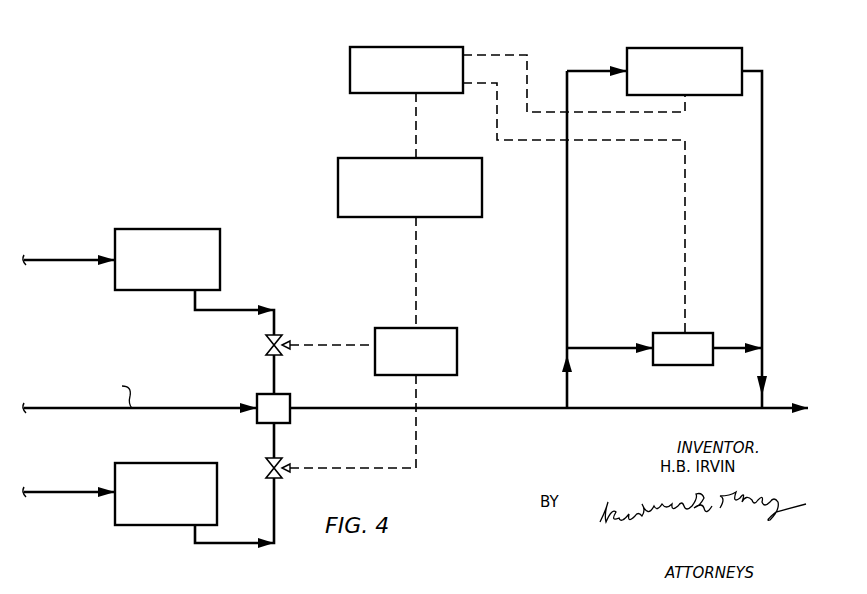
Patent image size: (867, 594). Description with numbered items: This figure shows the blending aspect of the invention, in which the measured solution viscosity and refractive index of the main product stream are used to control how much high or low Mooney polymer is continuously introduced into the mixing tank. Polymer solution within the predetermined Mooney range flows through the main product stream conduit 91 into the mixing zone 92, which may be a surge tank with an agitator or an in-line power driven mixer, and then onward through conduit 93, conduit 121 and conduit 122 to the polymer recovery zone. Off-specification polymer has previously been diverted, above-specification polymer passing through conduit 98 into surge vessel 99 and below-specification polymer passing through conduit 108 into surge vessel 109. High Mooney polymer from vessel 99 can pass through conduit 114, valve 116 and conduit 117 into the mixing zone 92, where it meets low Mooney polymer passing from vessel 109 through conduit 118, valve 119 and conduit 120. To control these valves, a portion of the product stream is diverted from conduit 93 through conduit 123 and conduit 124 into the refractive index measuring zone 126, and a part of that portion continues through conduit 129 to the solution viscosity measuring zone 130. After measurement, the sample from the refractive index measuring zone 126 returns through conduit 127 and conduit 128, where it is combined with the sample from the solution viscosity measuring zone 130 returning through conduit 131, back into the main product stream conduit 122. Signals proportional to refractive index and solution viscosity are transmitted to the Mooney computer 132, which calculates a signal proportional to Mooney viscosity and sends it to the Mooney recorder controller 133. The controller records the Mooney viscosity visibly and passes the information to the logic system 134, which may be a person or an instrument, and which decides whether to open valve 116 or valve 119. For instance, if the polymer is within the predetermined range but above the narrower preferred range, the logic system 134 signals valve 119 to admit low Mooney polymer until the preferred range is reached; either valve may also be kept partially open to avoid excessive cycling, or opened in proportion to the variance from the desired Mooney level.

The conduit 91 is at (191, 408).
The mixing zone 92 is at (290, 423).
The conduit 93 is at (488, 408).
The conduit 98 is at (44, 261).
The surge vessel 99 is at (217, 282).
The conduit 108 is at (77, 492).
The surge vessel 109 is at (115, 515).
The conduit 114 is at (274, 312).
The valve 116 is at (266, 352).
The conduit 117 is at (280, 379).
The conduit 118 is at (192, 544).
The valve 119 is at (264, 472).
The conduit 120 is at (271, 444).
The conduit 121 is at (611, 408).
The conduit 122 is at (801, 408).
The conduit 123 is at (564, 367).
The conduit 124 is at (620, 344).
The refractive index measuring zone 126 is at (667, 333).
The conduit 127 is at (736, 344).
The conduit 128 is at (762, 367).
The conduit 129 is at (567, 208).
The solution viscosity measuring zone 130 is at (683, 48).
The conduit 131 is at (762, 67).
The Mooney computer 132 is at (399, 47).
The Mooney recorder controller 133 is at (338, 198).
The logic system 134 is at (440, 328).